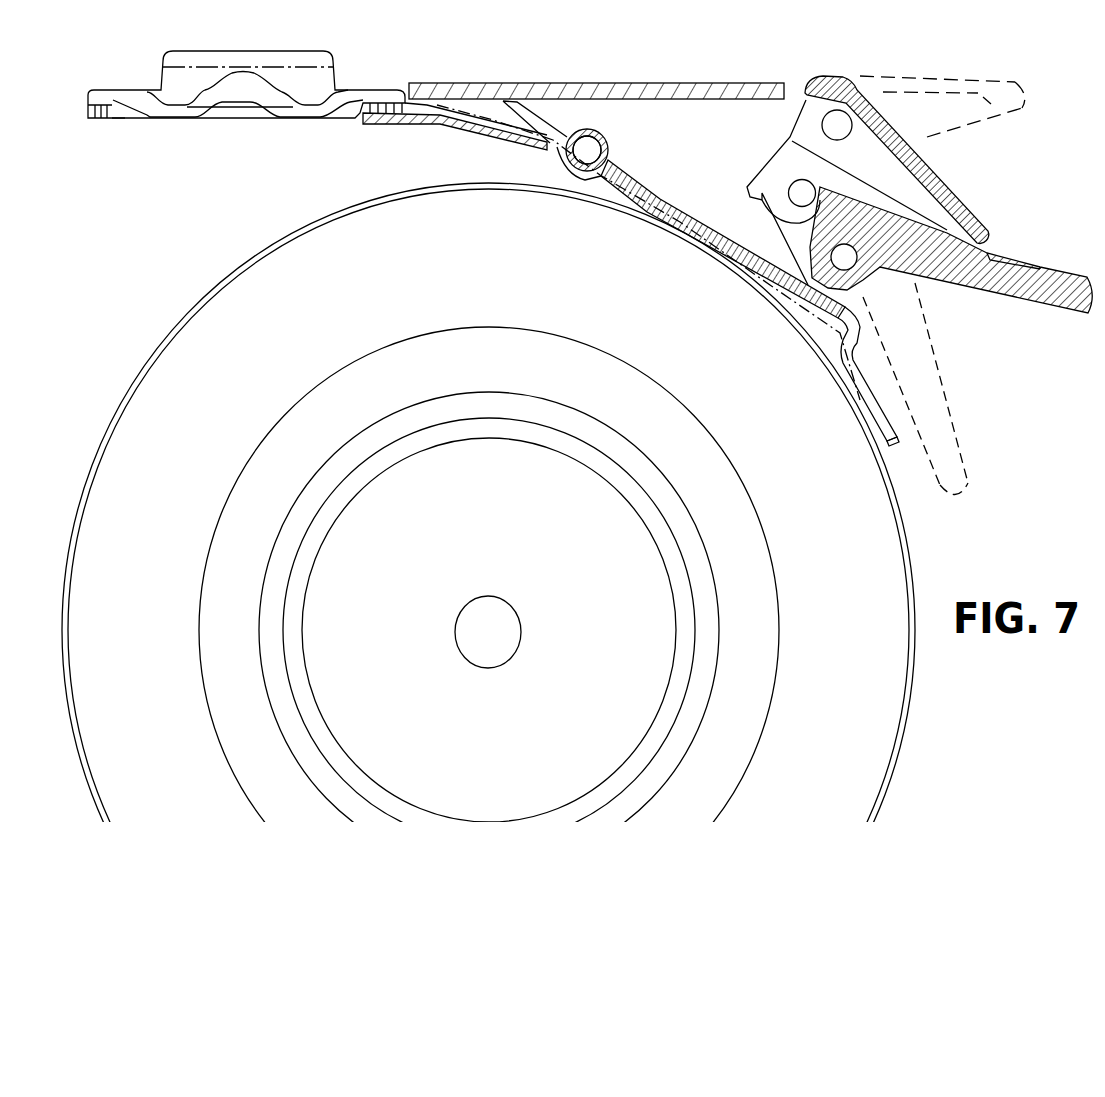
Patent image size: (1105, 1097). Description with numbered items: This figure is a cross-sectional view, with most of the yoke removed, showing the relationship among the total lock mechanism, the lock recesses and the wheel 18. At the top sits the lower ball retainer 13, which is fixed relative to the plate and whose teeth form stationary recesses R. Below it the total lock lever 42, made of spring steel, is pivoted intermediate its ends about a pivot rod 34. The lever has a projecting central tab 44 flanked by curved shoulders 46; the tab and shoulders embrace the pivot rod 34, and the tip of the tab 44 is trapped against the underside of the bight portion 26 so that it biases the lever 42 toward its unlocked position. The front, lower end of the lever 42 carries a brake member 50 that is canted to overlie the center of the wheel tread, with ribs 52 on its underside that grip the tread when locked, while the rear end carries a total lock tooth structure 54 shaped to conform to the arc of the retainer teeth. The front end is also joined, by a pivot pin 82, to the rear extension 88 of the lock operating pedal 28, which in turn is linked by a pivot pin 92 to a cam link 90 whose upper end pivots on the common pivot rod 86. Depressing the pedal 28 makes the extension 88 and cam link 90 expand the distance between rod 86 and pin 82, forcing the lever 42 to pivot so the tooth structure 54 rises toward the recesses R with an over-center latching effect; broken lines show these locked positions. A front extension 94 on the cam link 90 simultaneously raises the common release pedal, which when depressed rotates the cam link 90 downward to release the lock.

The lower ball retainer 13 is at (105, 90).
The recesses R is at (115, 128).
The wheel 18 is at (130, 407).
The bight portion 26 is at (556, 85).
The lock operating pedal 28 is at (1085, 312).
The pivot rod 34 is at (605, 148).
The total lock lever 42 is at (645, 186).
The central tab 44 is at (512, 100).
The curved shoulders 46 is at (592, 140).
The brake member 50 is at (840, 397).
The ribs 52 is at (857, 383).
The total lock tooth structure 54 is at (383, 125).
The pivot pin 82 is at (844, 257).
The common pivot rod 86 is at (904, 196).
The rear extension 88 is at (780, 217).
The cam link 90 is at (830, 124).
The pivot pin 92 is at (802, 193).
The front extension 94 is at (920, 206).